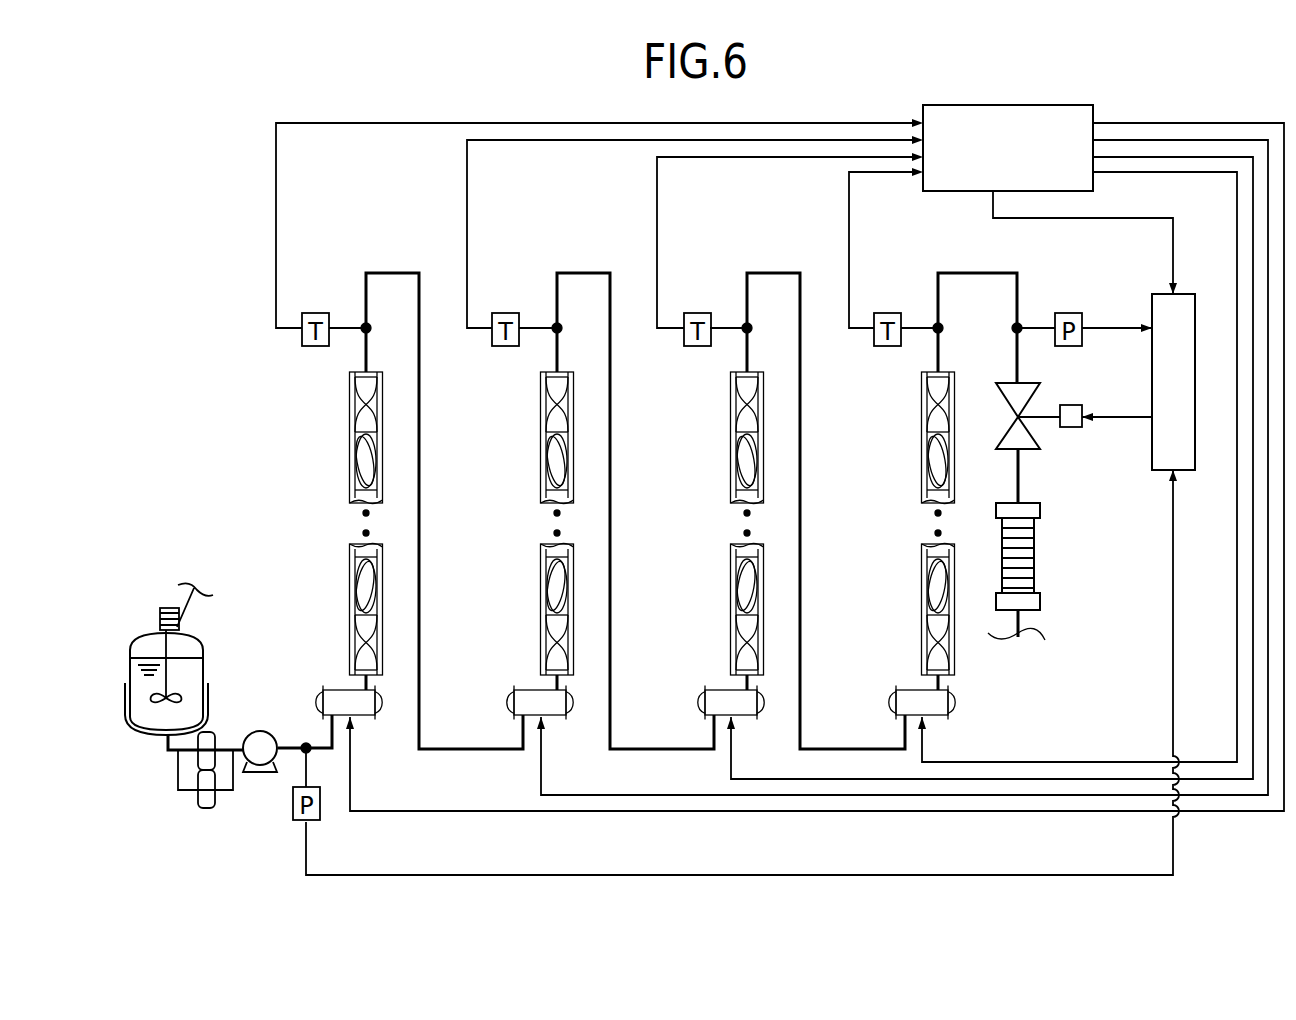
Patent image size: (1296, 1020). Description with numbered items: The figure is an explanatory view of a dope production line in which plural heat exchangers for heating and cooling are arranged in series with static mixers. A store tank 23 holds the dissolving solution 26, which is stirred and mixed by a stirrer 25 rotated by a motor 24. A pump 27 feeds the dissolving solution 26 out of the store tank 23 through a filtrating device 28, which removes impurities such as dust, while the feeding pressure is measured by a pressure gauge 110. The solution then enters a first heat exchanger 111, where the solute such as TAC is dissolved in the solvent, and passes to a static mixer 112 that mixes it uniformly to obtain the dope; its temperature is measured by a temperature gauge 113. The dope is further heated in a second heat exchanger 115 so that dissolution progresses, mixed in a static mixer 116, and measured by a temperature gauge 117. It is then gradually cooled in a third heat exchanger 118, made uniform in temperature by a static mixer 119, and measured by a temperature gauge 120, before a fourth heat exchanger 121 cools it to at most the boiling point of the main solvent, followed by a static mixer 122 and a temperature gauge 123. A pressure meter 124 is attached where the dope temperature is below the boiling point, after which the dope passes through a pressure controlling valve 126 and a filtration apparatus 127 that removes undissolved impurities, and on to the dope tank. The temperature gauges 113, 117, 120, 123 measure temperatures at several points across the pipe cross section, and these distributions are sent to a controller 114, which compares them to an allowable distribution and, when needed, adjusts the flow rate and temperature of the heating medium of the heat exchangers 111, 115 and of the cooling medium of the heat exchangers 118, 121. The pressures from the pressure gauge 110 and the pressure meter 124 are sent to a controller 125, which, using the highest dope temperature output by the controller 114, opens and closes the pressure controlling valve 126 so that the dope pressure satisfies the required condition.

The store tank 23 is at (130, 670).
The motor 24 is at (160, 617).
The stirrer 25 is at (153, 692).
The dissolving solution 26 is at (187, 685).
The pump 27 is at (262, 770).
The filtrating device 28 is at (205, 800).
The pressure gauge 110 is at (293, 805).
The first heat exchanger 111 is at (337, 707).
The static mixer 112 is at (342, 372).
The temperature gauge 113 is at (315, 312).
The controller 114 is at (957, 192).
The second heat exchanger 115 is at (530, 700).
The static mixer 116 is at (533, 372).
The temperature gauge 117 is at (505, 312).
The third heat exchanger 118 is at (720, 700).
The static mixer 119 is at (723, 372).
The temperature gauge 120 is at (697, 312).
The fourth heat exchanger 121 is at (912, 700).
The static mixer 122 is at (914, 372).
The temperature gauge 123 is at (888, 312).
The pressure meter 124 is at (1068, 312).
The controller 125 is at (1152, 432).
The pressure controlling valve 126 is at (1035, 437).
The filtration apparatus 127 is at (1034, 560).